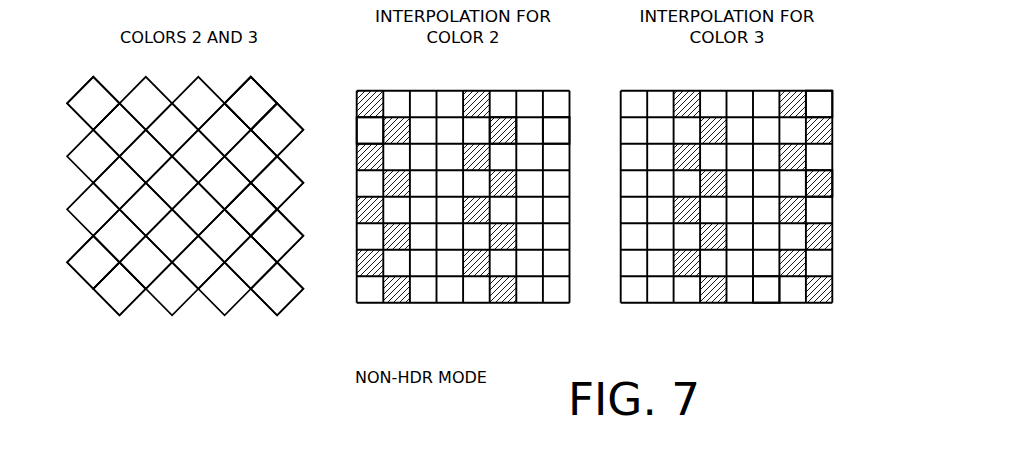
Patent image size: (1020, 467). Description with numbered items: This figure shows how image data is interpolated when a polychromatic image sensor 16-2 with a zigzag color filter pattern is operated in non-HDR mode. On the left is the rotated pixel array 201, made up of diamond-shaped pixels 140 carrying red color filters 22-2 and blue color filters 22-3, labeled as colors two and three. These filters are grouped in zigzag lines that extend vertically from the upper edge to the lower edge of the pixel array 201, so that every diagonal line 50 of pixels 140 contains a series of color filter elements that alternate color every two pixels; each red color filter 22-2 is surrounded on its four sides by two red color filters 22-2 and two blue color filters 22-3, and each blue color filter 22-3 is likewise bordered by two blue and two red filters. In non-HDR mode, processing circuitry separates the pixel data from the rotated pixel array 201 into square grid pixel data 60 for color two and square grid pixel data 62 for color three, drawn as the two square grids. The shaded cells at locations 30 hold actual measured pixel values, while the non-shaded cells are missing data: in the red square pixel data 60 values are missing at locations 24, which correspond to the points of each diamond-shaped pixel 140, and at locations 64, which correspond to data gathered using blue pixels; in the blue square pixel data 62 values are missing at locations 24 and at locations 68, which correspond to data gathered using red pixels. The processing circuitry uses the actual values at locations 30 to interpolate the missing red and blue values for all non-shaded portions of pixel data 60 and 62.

The image sensor 16-2 is at (136, 327).
The diagonal line 50 is at (82, 93).
The pixel array 201 is at (270, 68).
The pixels 140 is at (273, 87).
The blue color filters 22-3 is at (300, 236).
The red color filters 22-2 is at (100, 303).
The square grid pixel data for color 2 60 is at (411, 324).
The square grid pixel data for color 3 62 is at (675, 324).
The locations 24 is at (370, 130).
The locations 30 is at (502, 128).
The locations 64 is at (557, 130).
The locations 68 is at (767, 291).